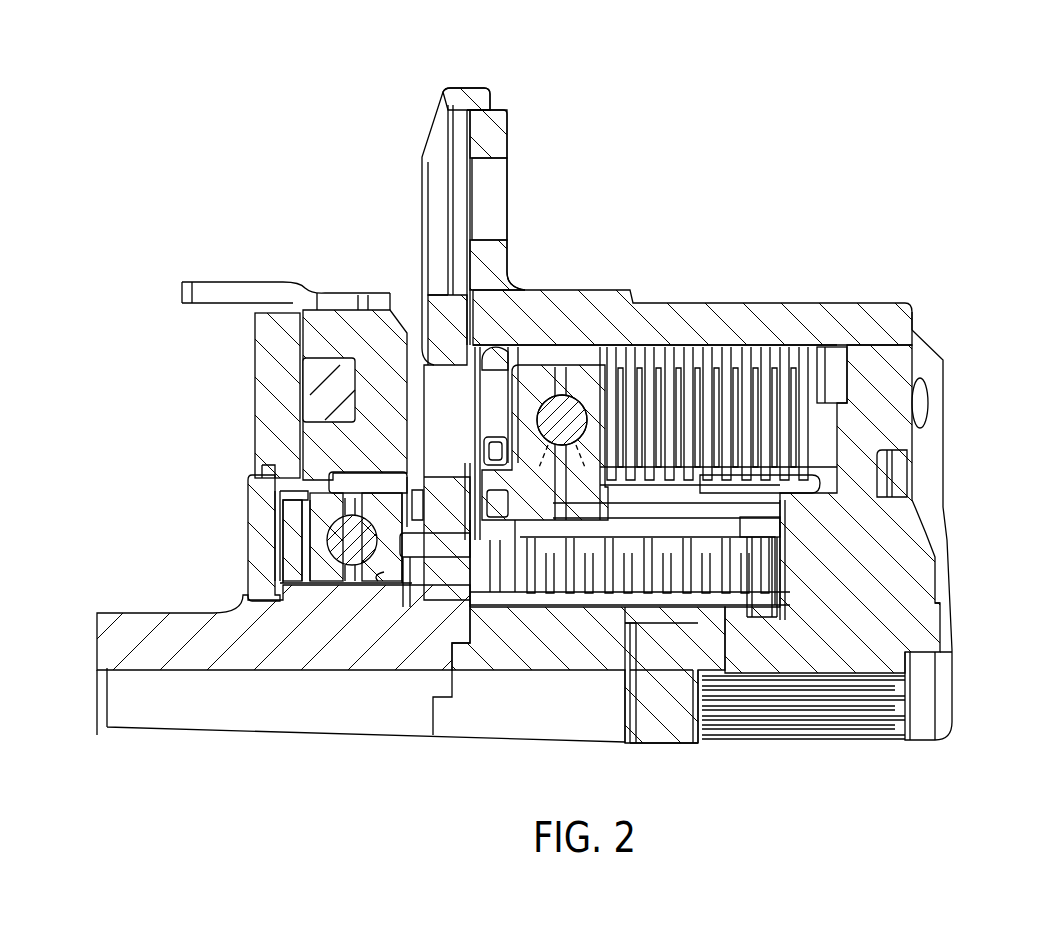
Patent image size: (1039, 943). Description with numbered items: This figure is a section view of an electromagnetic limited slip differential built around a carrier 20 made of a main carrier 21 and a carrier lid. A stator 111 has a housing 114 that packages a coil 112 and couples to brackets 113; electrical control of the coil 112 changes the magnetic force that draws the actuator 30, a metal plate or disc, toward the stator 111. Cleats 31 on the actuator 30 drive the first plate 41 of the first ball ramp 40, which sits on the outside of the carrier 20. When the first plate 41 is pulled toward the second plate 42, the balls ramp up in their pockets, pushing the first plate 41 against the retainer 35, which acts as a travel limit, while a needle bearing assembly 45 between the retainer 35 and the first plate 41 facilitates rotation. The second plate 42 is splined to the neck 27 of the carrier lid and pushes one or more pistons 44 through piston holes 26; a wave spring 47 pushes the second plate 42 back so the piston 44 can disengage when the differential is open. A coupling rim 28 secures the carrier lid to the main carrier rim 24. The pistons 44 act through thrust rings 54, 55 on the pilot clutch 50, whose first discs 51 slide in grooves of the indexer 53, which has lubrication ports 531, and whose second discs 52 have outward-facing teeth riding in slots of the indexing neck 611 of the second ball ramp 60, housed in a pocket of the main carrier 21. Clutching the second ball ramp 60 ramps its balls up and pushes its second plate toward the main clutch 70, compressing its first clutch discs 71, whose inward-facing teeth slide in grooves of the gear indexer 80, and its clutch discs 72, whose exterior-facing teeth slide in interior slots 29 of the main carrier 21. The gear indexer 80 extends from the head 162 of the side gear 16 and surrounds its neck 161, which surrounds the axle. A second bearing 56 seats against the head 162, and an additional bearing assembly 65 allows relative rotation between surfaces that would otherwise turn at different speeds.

The side gear 16 is at (925, 635).
The carrier 20 is at (480, 70).
The main carrier 21 is at (905, 305).
The main carrier rim 24 is at (500, 115).
The piston holes 26 is at (445, 605).
The neck 27 is at (105, 620).
The coupling rim 28 is at (453, 99).
The interior slots 29 is at (600, 345).
The actuator 30 is at (262, 322).
The cleats 31 is at (262, 470).
The retainer 35 is at (257, 490).
The first ball ramp 40 is at (345, 620).
The first plate 41 is at (315, 590).
The second plate 42 is at (378, 590).
The piston 44 is at (440, 557).
The needle bearing assembly 45 is at (270, 547).
The wave spring 47 is at (423, 477).
The pilot clutch 50 is at (633, 665).
The first discs 51 is at (772, 630).
The second discs 52 is at (705, 585).
The indexer 53 is at (505, 578).
The thrust ring 54 is at (485, 608).
The thrust ring 55 is at (532, 607).
The second bearing 56 is at (745, 640).
The second ball ramp 60 is at (562, 355).
The bearing assembly 65 is at (495, 385).
The main clutch 70 is at (723, 357).
The first clutch discs 71 is at (822, 485).
The clutch discs 72 is at (805, 347).
The gear indexer 80 is at (812, 490).
The stator 111 is at (350, 318).
The coil 112 is at (322, 370).
The brackets 113 is at (203, 287).
The housing 114 is at (388, 315).
The neck 161 is at (645, 650).
The head 162 is at (915, 538).
The lubrication ports 531 is at (612, 620).
The indexing neck 611 is at (795, 540).